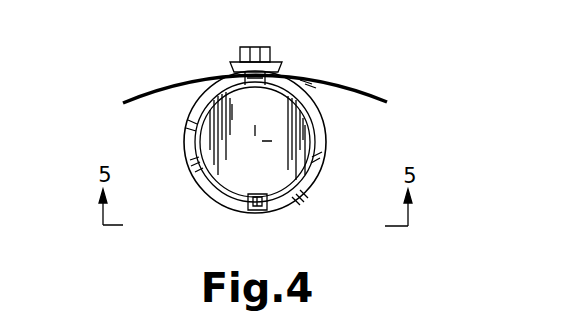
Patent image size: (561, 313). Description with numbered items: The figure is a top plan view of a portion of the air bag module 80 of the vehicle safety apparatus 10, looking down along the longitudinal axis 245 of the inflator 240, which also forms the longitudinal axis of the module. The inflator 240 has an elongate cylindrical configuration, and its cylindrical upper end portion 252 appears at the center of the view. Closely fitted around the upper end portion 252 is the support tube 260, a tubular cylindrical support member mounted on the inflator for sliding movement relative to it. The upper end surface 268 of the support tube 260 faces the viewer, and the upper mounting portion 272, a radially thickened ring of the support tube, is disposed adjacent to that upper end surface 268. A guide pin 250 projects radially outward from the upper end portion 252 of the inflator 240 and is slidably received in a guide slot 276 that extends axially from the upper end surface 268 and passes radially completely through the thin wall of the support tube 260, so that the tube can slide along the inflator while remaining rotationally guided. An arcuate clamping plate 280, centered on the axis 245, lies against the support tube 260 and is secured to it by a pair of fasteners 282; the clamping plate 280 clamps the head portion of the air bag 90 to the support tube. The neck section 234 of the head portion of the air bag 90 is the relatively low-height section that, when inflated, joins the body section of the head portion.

The vehicle safety apparatus 10 is at (431, 107).
The air bag module 80 is at (108, 125).
The air bag 90 is at (158, 83).
The neck section 234 is at (343, 83).
The inflator 240 is at (222, 192).
The longitudinal axis 245 is at (257, 142).
The guide pin 250 is at (240, 206).
The upper end portion 252 is at (242, 158).
The support tube 260 is at (316, 126).
The upper end surface 268 is at (190, 123).
The upper mounting portion 272 is at (319, 176).
The guide slot 276 is at (257, 212).
The clamping plate 280 is at (231, 66).
The fasteners 282 is at (245, 46).